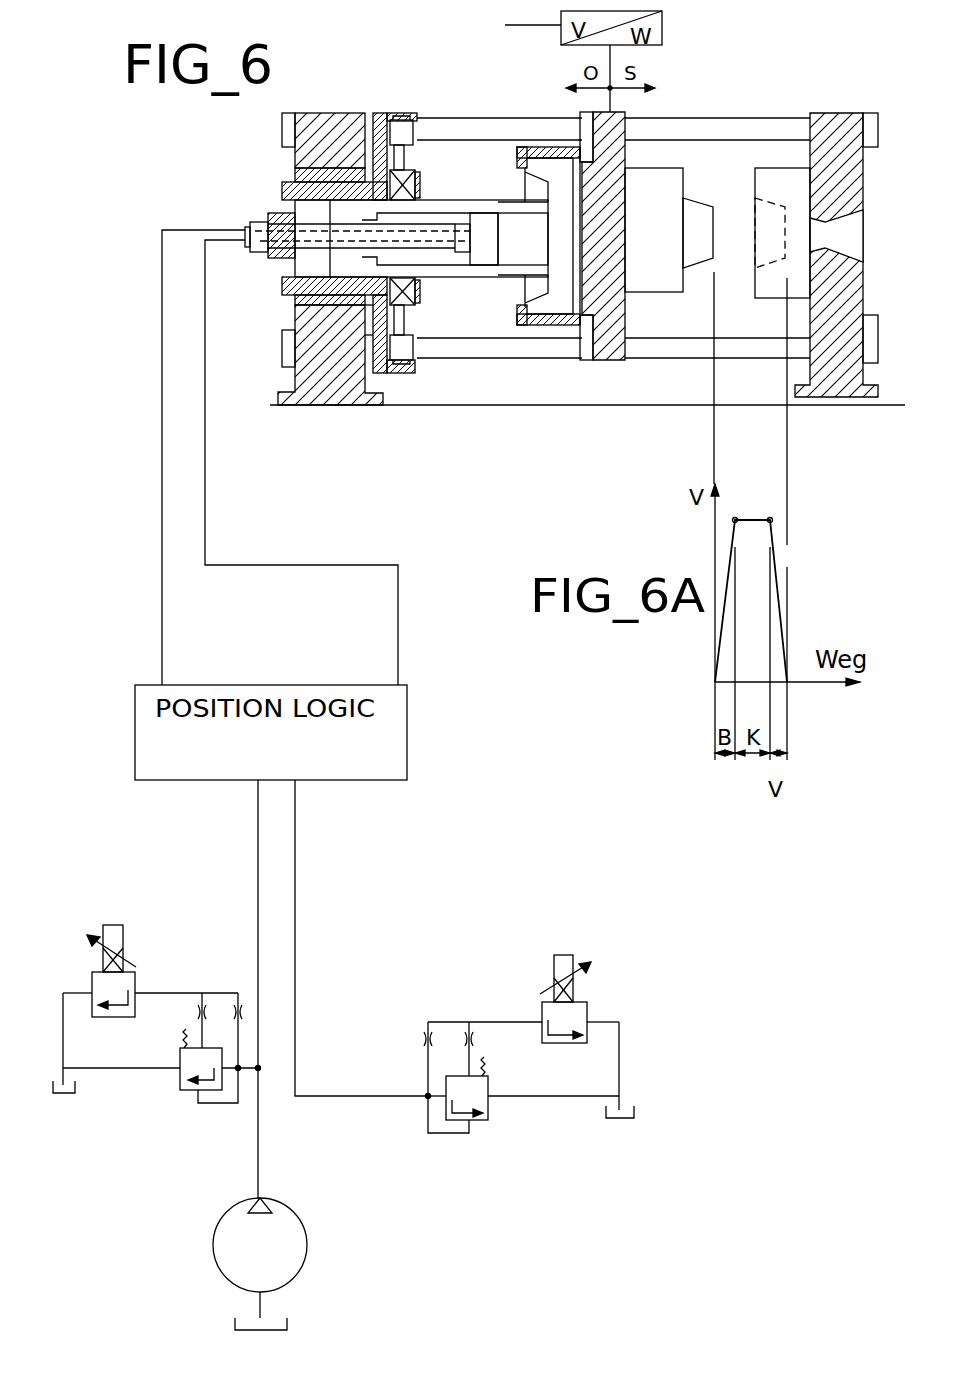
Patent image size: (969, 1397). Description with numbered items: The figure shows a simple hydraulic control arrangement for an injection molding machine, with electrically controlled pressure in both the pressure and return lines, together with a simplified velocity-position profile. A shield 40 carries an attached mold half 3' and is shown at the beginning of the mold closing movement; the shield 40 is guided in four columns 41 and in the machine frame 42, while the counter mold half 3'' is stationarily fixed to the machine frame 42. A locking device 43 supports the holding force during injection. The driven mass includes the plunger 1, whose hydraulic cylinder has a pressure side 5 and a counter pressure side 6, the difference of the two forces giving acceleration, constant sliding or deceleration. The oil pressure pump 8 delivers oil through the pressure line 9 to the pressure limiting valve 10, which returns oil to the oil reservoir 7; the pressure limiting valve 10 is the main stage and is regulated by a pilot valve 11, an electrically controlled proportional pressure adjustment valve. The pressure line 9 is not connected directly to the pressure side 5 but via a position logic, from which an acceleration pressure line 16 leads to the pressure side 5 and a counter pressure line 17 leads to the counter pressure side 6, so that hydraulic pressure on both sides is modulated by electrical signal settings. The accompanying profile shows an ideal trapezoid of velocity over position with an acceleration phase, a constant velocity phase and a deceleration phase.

The plunger 1 is at (477, 226).
The mold half 3' is at (669, 326).
The counter mold half 3'' is at (761, 350).
The pressure side 5 is at (523, 250).
The counter pressure side 6 is at (447, 257).
The oil reservoir 7 is at (290, 1322).
The oil pressure pump 8 is at (302, 1222).
The pressure line 9 is at (258, 903).
The pressure limiting valve 10 is at (168, 1115).
The pilot valve 11 is at (70, 945).
The acceleration pressure line 16 is at (160, 478).
The counter pressure line 17 is at (205, 475).
The shield 40 is at (602, 362).
The columns 41 is at (733, 125).
The machine frame 42 is at (340, 392).
The locking device 43 is at (402, 125).